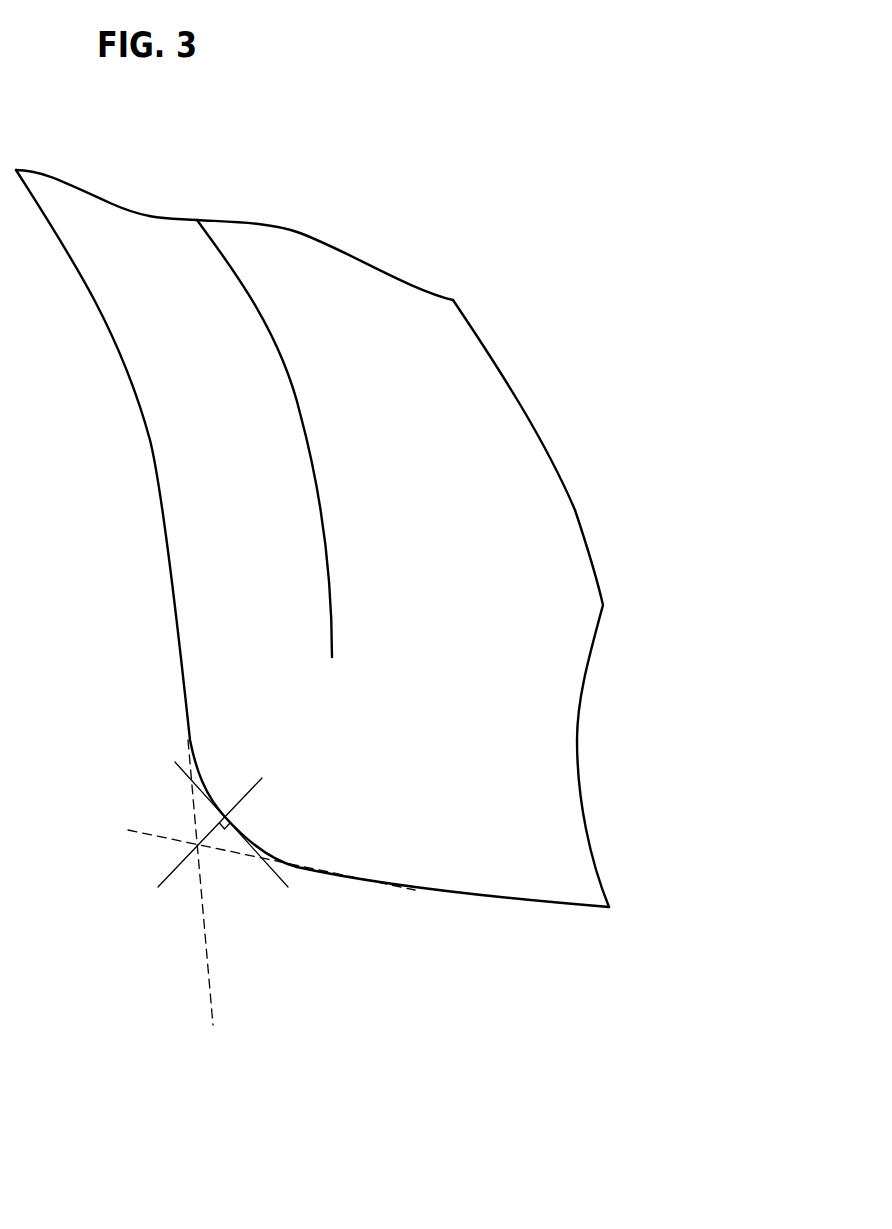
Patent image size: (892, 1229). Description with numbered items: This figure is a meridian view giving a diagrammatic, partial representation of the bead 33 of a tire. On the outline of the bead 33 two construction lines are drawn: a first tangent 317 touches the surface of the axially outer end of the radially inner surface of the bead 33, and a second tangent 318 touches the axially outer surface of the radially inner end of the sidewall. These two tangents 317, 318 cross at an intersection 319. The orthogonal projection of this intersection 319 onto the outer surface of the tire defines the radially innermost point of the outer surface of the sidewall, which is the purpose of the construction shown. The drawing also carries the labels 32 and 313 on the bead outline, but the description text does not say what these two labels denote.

The ridge line 32 is at (311, 447).
The bead 33 is at (508, 563).
The corner portion 313 is at (228, 813).
The first tangent 317 is at (327, 873).
The second tangent 318 is at (208, 963).
The intersection 319 is at (197, 846).